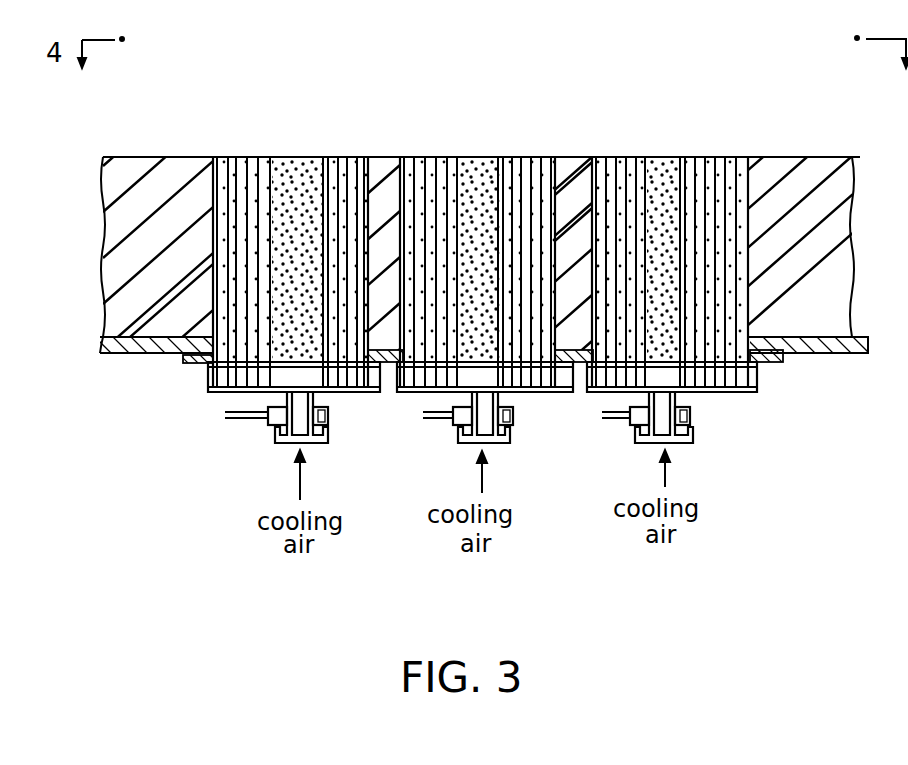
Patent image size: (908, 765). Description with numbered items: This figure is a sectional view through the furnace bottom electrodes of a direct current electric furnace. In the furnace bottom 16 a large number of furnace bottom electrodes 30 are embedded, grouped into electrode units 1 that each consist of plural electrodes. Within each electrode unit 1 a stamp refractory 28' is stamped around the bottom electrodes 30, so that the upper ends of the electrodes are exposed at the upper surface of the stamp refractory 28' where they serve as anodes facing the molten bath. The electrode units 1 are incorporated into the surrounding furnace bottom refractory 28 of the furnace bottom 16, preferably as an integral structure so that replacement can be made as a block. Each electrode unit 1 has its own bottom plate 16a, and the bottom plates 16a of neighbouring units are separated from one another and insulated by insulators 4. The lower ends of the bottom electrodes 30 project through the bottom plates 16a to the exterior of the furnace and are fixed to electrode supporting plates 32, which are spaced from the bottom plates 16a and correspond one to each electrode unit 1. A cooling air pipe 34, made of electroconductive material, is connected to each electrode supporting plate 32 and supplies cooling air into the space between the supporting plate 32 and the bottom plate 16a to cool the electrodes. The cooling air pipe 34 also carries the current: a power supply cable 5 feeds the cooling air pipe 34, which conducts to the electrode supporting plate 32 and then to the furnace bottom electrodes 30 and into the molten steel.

The electrode unit 1 is at (282, 143).
The insulator 4 is at (180, 360).
The power supply cable 5 is at (250, 423).
The furnace bottom 16 is at (118, 350).
The bottom plate 16a is at (212, 387).
The furnace bottom refractory 28 is at (485, 262).
The stamp refractory 28' is at (500, 218).
The furnace bottom electrode 30 is at (223, 163).
The electrode supporting plate 32 is at (367, 395).
The cooling air pipe 34 is at (278, 442).